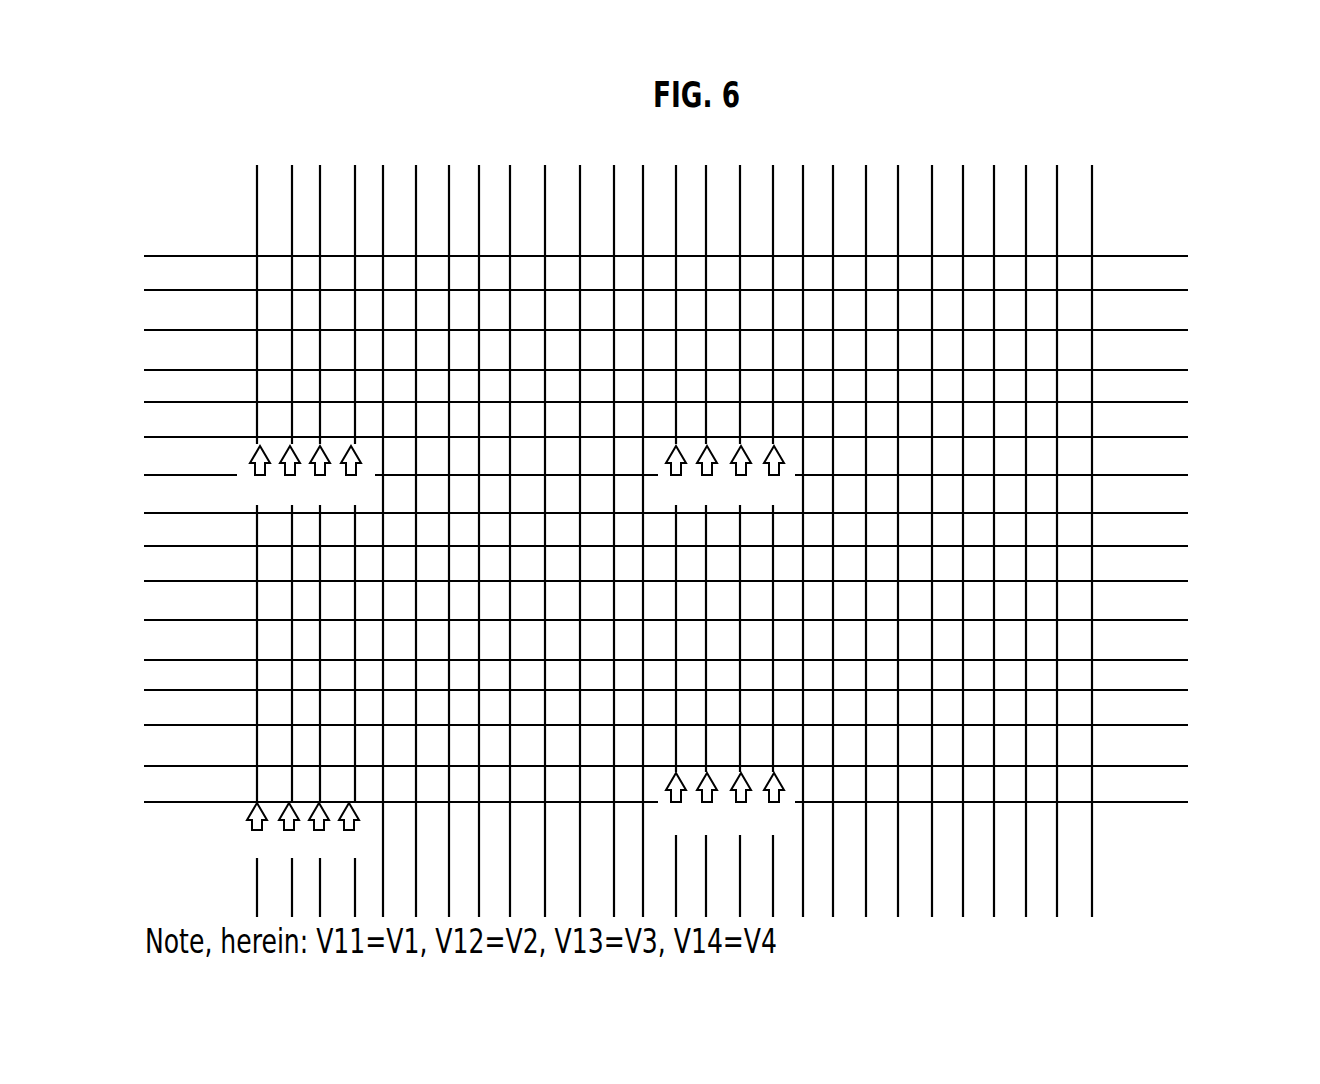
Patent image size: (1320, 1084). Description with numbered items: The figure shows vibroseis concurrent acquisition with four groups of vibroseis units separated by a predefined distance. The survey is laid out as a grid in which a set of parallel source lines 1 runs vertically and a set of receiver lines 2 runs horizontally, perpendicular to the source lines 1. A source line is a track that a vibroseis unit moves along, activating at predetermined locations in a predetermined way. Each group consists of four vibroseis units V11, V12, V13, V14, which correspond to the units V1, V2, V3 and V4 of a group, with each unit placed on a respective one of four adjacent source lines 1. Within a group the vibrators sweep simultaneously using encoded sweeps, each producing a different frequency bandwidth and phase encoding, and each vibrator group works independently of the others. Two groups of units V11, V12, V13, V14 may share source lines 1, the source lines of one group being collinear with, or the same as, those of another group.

The source lines 1 is at (674, 479).
The receiver lines 2 is at (701, 529).
The vibroseis unit V11 is at (464, 652).
The vibroseis unit V12 is at (498, 652).
The vibroseis unit V13 is at (532, 652).
The vibroseis unit V14 is at (565, 652).